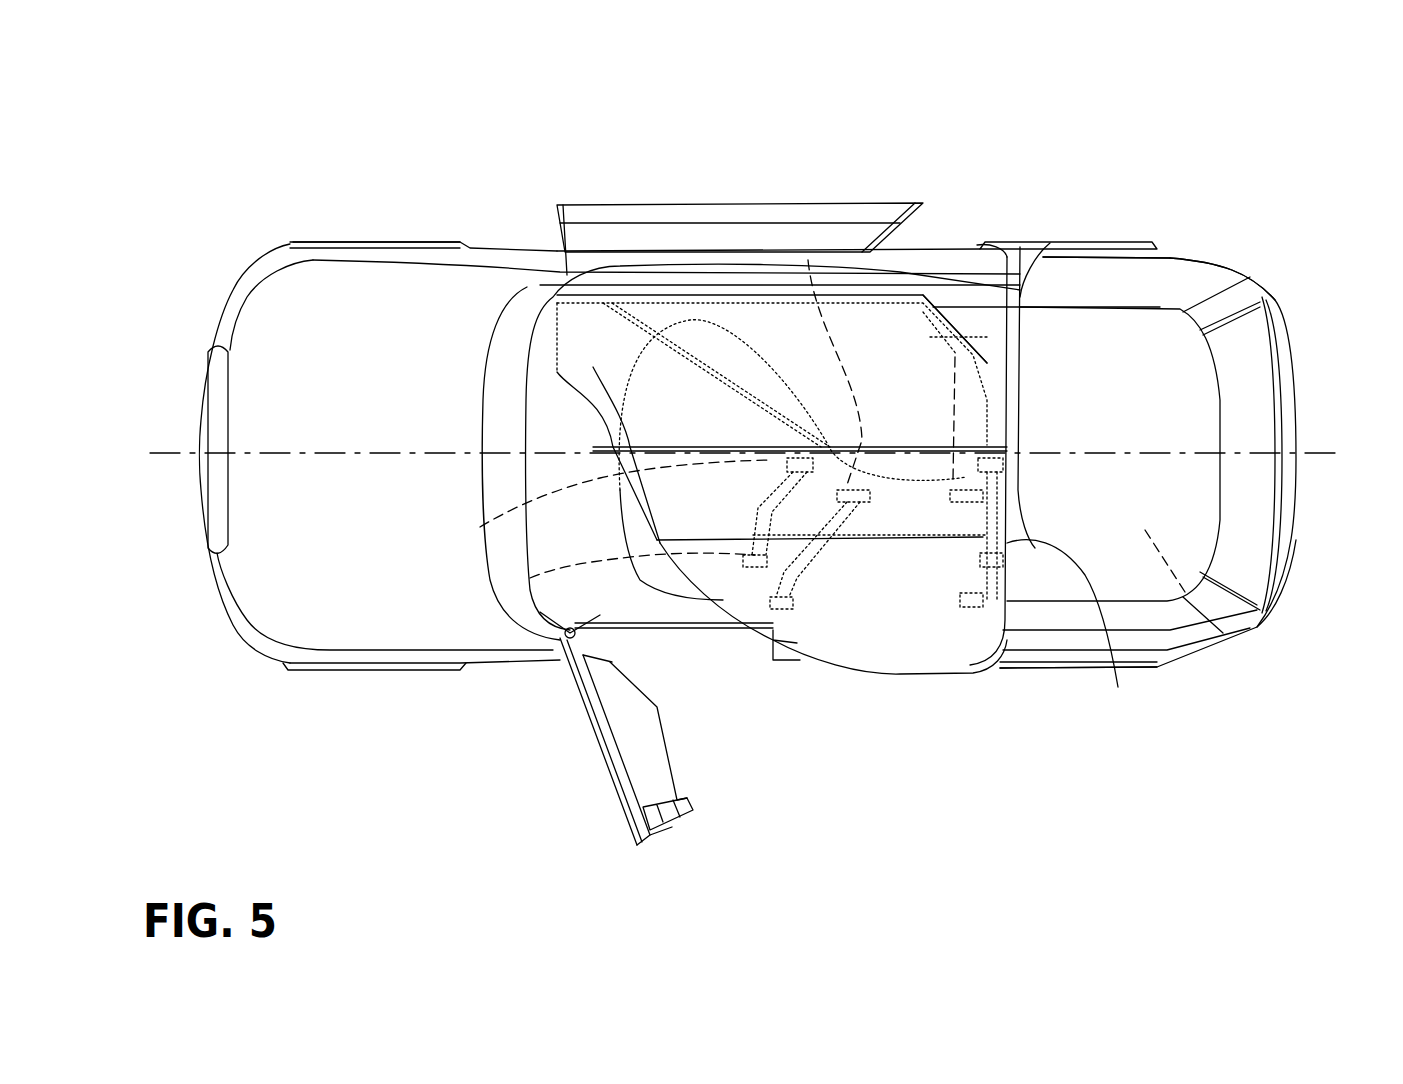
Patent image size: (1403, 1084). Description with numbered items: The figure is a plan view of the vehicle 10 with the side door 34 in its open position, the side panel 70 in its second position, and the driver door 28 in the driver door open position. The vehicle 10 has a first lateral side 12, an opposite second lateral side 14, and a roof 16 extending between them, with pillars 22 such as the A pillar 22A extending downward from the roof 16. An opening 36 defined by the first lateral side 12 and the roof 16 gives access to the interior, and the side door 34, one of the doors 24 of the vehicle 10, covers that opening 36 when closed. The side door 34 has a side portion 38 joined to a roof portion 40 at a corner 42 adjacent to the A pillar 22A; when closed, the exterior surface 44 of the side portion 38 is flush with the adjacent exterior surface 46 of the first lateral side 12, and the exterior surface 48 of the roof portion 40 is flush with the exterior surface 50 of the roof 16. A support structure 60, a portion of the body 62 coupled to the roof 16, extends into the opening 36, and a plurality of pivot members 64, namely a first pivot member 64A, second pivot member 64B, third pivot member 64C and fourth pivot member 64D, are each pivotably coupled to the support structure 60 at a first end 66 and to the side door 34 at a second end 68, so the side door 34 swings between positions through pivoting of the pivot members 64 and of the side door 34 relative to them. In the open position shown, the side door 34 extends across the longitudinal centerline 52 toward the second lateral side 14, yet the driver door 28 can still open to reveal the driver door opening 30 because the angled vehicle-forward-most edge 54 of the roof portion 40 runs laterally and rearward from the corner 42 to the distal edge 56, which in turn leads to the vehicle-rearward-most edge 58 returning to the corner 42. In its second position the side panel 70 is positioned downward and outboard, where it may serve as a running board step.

The vehicle 10 is at (1164, 162).
The first lateral side 12 is at (478, 240).
The second lateral side 14 is at (1101, 676).
The roof 16 is at (1187, 388).
The pillars 22 is at (1030, 280).
The A pillar 22A is at (553, 293).
The door 24 is at (399, 391).
The driver door 28 is at (608, 792).
The driver door opening 30 is at (684, 630).
The side door 34 is at (578, 351).
The opening 36 is at (951, 302).
The side portion 38 is at (753, 330).
The roof portion 40 is at (885, 590).
The corner 42 is at (623, 452).
The exterior surface of the side portion 44 is at (688, 300).
The exterior surface of the first lateral side 46 is at (1100, 247).
The exterior surface of the roof portion 48 is at (910, 650).
The exterior surface of the roof 50 is at (1057, 580).
The longitudinal centerline 52 is at (163, 455).
The vehicle-forward-most edge 54 is at (737, 600).
The distal edge 56 is at (965, 665).
The vehicle-rearward-most edge 58 is at (1100, 600).
The support structure 60 is at (1061, 343).
The body 62 is at (1002, 333).
The pivot members 64 is at (1011, 660).
The first pivot member 64A is at (995, 502).
The second pivot member 64B is at (975, 468).
The third pivot member 64C is at (803, 490).
The fourth pivot member 64D is at (780, 587).
The first end 66 is at (808, 260).
The second end 68 is at (1003, 573).
The side panel 70 is at (633, 218).